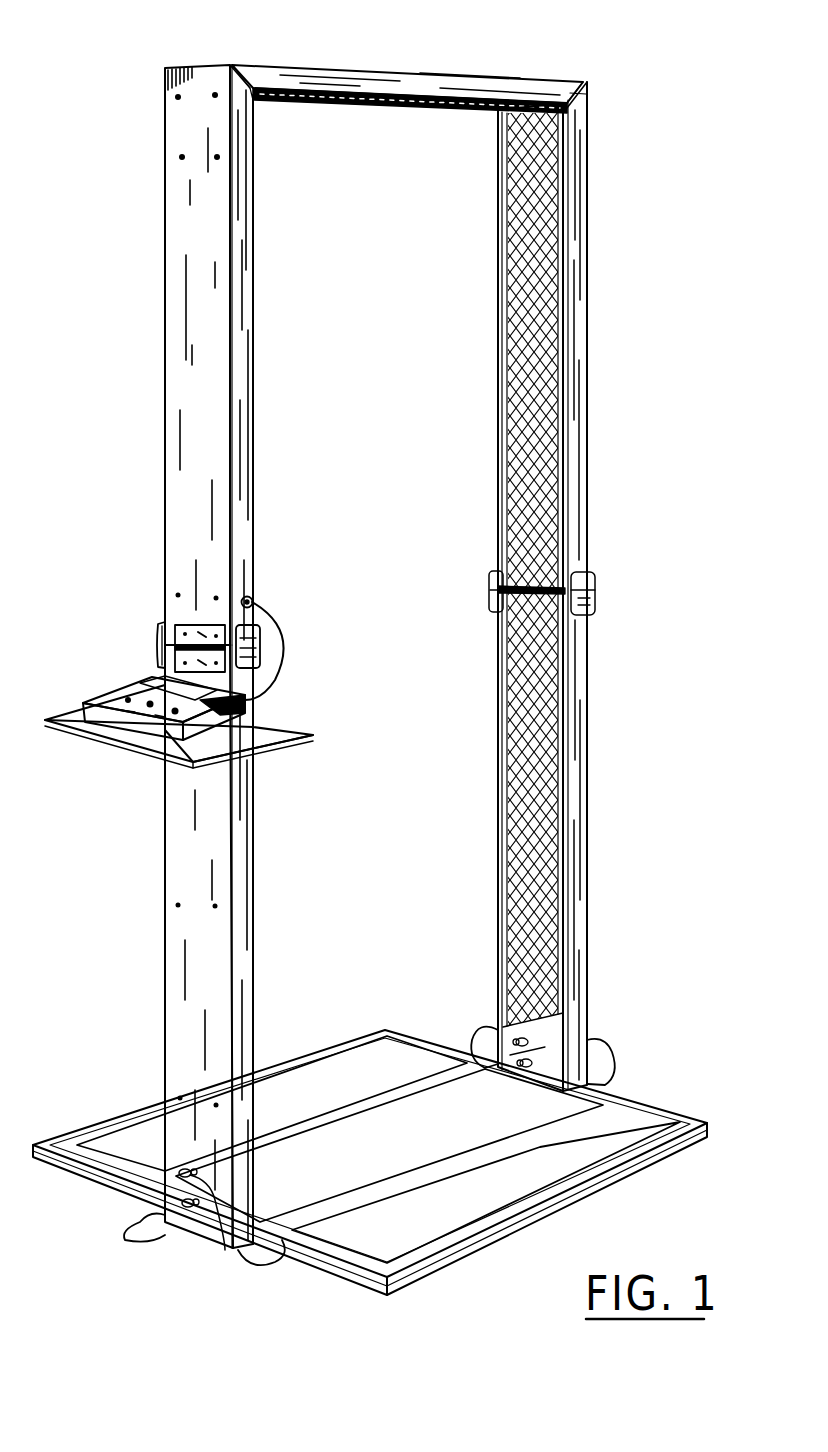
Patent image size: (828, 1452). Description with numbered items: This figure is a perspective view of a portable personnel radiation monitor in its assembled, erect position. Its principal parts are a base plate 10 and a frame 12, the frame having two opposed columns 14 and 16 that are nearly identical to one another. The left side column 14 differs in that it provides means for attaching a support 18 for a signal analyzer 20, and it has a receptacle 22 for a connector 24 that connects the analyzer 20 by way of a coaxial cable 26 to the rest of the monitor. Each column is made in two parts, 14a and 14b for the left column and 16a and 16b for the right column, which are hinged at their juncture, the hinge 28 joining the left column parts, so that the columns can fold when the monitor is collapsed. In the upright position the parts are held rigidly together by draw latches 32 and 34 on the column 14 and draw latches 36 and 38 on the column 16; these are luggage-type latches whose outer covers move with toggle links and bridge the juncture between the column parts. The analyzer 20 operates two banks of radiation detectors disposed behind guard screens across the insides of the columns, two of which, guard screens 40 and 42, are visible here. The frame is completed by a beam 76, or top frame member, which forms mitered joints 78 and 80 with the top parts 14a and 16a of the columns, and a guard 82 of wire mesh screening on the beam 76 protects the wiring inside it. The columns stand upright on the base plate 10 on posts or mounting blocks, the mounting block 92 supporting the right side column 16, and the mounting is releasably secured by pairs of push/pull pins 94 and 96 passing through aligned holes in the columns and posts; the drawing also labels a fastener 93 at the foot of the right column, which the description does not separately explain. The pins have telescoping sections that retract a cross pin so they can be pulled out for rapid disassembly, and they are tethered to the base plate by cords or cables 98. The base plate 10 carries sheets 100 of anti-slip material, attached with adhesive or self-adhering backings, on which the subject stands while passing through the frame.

The base plate 10 is at (497, 1237).
The frame 12 is at (600, 196).
The left side column 14 is at (162, 656).
The upper part of left column 14a is at (178, 432).
The lower part of left column 14b is at (165, 905).
The right side column 16 is at (555, 668).
The upper part of right column 16a is at (575, 268).
The lower part of right column 16b is at (583, 815).
The support 18 is at (138, 750).
The signal analyzer 20 is at (130, 685).
The receptacle 22 is at (252, 597).
The connector 24 is at (257, 600).
The coaxial cable 26 is at (282, 660).
The hinge 28 is at (207, 625).
The draw latch 32 is at (160, 635).
The draw latch 34 is at (260, 640).
The draw latch 36 is at (497, 590).
The draw latch 38 is at (596, 590).
The guard screen 40 is at (540, 357).
The guard screen 42 is at (548, 880).
The beam 76 is at (402, 78).
The mitered joint 78 is at (246, 64).
The mitered joint 80 is at (567, 88).
The guard 82 is at (412, 110).
The mounting block 92 is at (550, 1050).
The bolt 93 is at (518, 1037).
The push/pull pins 94 is at (193, 1213).
The push/pull pins 96 is at (525, 1067).
The cords or cables 98 is at (125, 1222).
The sheets of anti-slip material 100 is at (298, 1080).